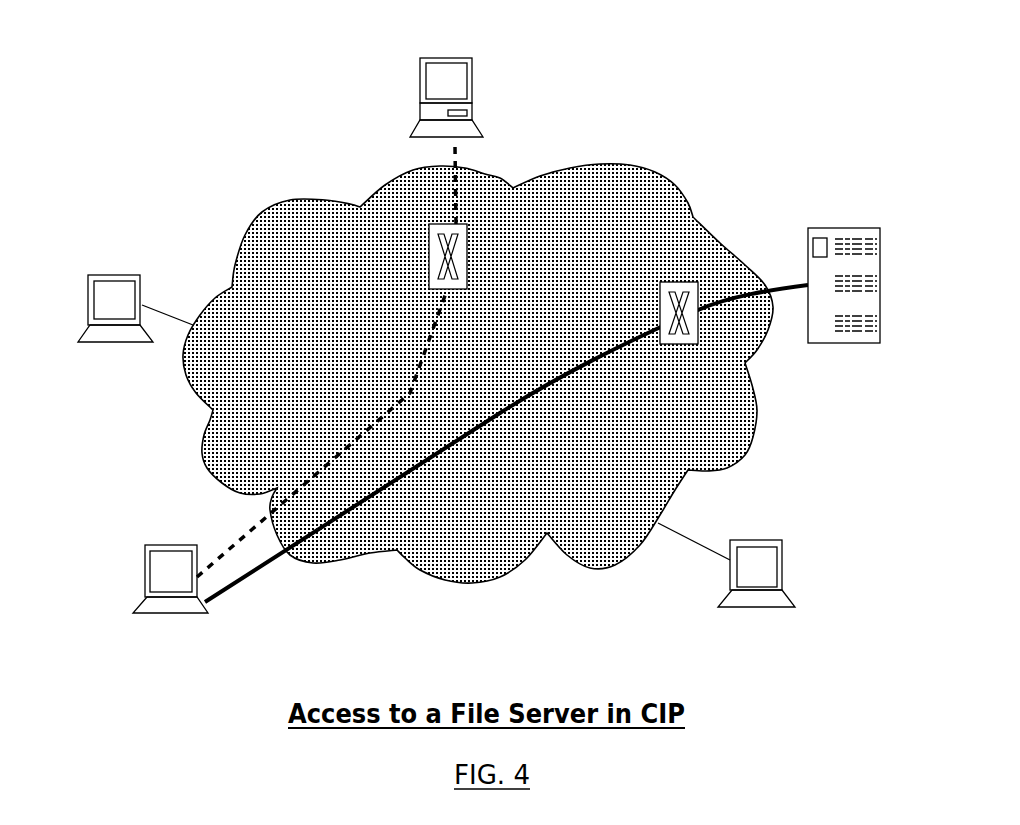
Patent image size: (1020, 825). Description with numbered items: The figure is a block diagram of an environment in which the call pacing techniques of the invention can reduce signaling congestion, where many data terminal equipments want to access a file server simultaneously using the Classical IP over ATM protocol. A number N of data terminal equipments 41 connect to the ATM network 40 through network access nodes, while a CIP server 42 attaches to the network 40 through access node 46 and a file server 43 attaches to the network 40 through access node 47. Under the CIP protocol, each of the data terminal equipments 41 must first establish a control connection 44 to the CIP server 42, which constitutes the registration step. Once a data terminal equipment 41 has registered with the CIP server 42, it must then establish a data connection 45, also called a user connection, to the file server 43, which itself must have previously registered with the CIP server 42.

The network 40 is at (667, 177).
The data terminal equipments 41 is at (118, 277).
The CIP server 42 is at (460, 57).
The file server 43 is at (837, 227).
The control connection 44 is at (405, 395).
The data connection 45 is at (550, 388).
The access node 46 is at (428, 257).
The access node 47 is at (660, 297).